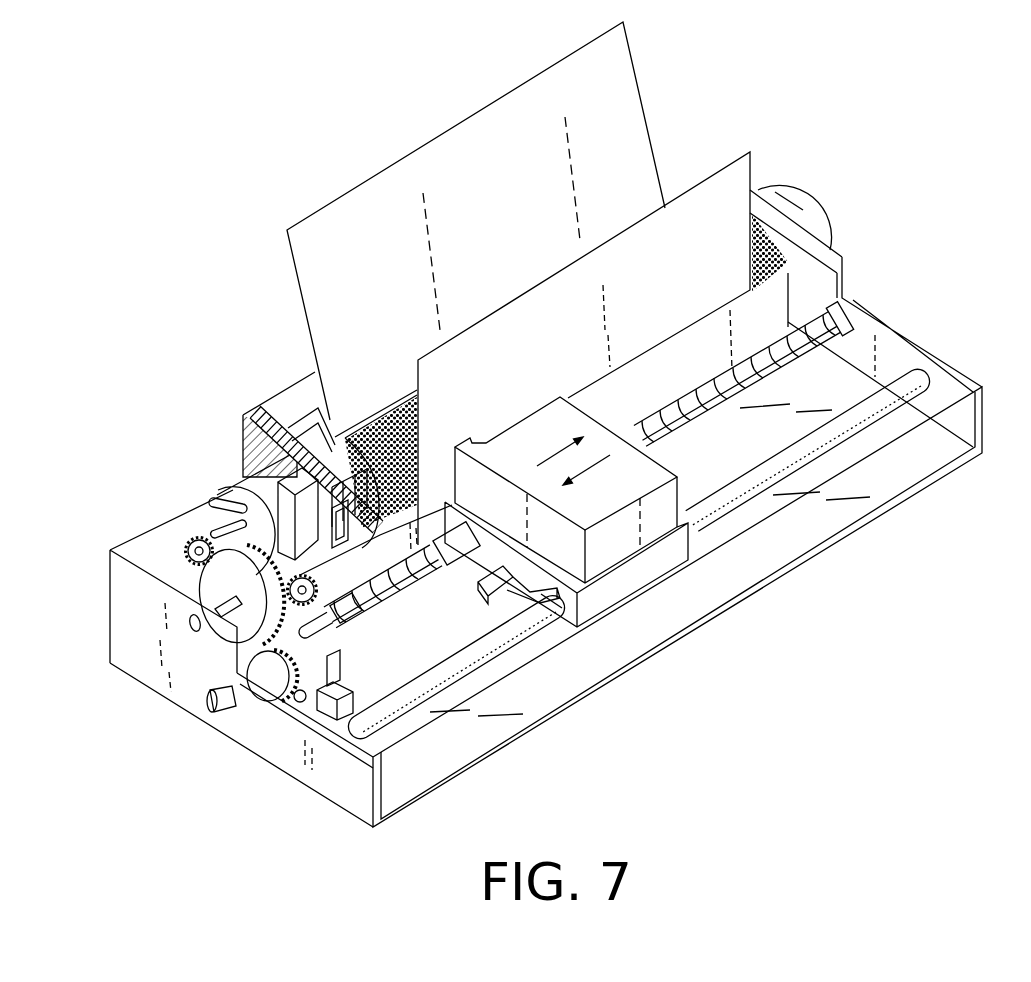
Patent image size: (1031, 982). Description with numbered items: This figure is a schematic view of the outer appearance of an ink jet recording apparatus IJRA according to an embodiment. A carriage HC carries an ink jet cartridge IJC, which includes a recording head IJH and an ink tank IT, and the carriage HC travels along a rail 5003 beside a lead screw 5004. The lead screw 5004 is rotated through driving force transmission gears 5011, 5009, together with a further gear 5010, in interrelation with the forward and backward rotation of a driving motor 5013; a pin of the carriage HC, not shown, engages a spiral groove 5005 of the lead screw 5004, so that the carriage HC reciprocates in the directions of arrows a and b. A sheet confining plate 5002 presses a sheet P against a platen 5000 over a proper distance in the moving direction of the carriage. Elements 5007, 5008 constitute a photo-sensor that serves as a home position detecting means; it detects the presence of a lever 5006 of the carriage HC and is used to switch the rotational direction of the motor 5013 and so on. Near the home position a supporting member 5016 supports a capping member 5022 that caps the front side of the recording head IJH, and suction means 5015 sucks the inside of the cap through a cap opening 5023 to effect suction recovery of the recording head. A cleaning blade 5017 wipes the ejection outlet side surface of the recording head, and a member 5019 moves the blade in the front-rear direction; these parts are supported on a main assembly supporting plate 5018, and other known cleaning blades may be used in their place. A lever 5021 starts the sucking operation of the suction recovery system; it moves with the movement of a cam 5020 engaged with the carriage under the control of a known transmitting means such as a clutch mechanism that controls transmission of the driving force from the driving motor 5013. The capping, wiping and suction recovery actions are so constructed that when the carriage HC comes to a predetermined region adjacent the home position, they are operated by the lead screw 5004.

The ink jet recording apparatus IJRA is at (825, 107).
The recording paper P is at (619, 90).
The sheet confining plate 5002 is at (705, 332).
The platen 5000 is at (782, 261).
The ink jet cartridge IJC is at (668, 463).
The ink jet head IJH is at (482, 440).
The ink tank IT is at (582, 428).
The carriage HC is at (690, 548).
The carriage movement direction a is at (560, 443).
The carriage movement direction b is at (587, 477).
The guide rail 5003 is at (553, 614).
The lead screw 5004 is at (427, 593).
The spiral groove 5005 is at (465, 663).
The lever 5006 is at (490, 598).
The photo-sensor element 5007 is at (353, 703).
The photo-sensor element 5008 is at (375, 714).
The driving force transmission gear 5009 is at (262, 700).
The driving force transmission gear 5010 is at (255, 640).
The driving force transmission gear 5011 is at (213, 585).
The driving motor 5013 is at (253, 490).
The suction means 5015 is at (318, 445).
The supporting member 5016 is at (338, 440).
The cleaning blade 5017 is at (358, 458).
The main assembly supporting plate 5018 is at (273, 407).
The blade moving member 5019 is at (243, 440).
The cam 5020 is at (300, 700).
The lever for starting sucking operation 5021 is at (215, 501).
The capping member 5022 is at (408, 530).
The cap opening 5023 is at (350, 625).